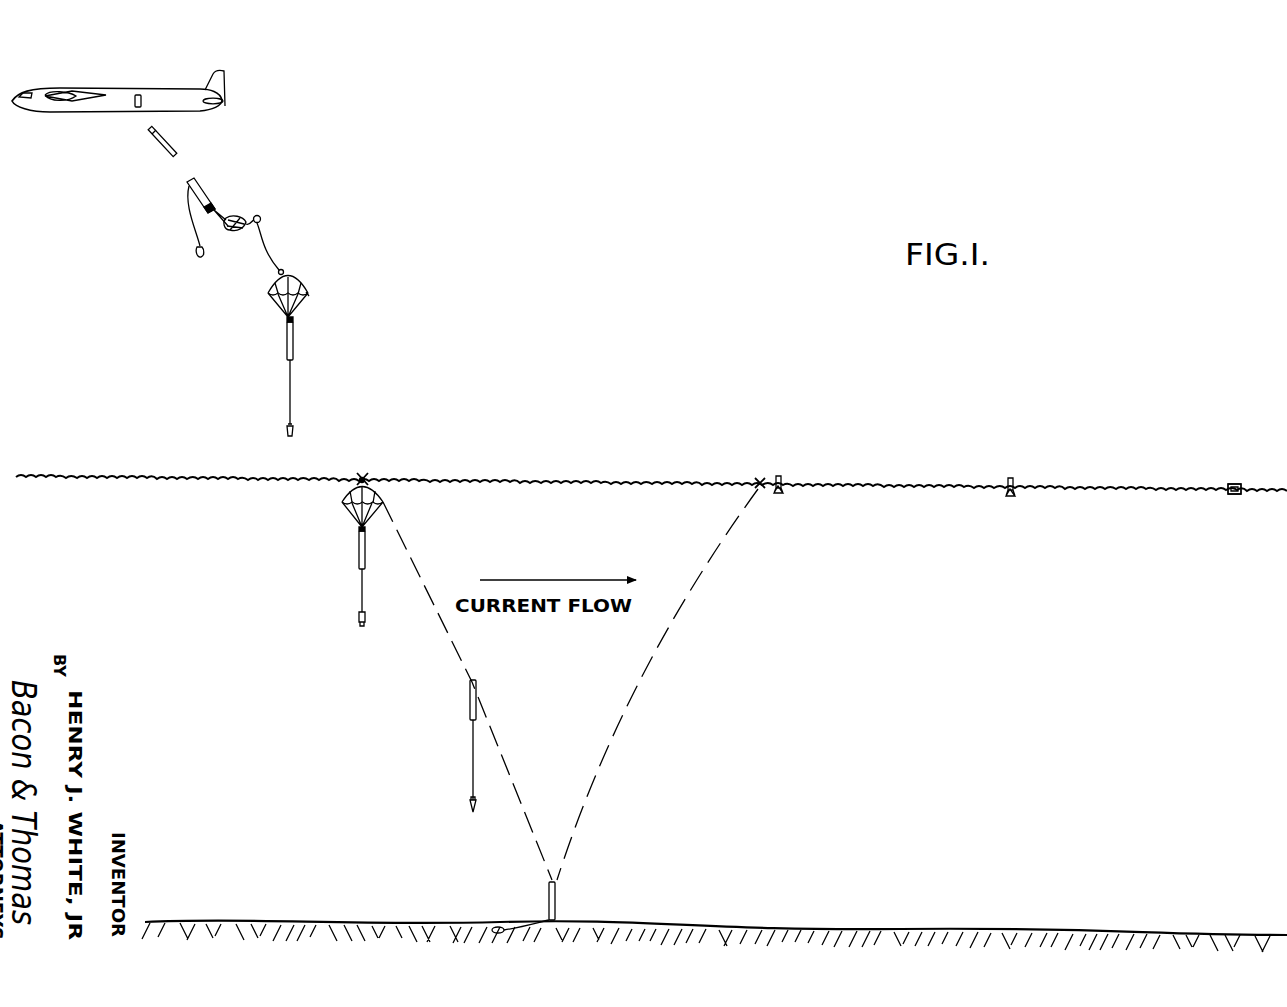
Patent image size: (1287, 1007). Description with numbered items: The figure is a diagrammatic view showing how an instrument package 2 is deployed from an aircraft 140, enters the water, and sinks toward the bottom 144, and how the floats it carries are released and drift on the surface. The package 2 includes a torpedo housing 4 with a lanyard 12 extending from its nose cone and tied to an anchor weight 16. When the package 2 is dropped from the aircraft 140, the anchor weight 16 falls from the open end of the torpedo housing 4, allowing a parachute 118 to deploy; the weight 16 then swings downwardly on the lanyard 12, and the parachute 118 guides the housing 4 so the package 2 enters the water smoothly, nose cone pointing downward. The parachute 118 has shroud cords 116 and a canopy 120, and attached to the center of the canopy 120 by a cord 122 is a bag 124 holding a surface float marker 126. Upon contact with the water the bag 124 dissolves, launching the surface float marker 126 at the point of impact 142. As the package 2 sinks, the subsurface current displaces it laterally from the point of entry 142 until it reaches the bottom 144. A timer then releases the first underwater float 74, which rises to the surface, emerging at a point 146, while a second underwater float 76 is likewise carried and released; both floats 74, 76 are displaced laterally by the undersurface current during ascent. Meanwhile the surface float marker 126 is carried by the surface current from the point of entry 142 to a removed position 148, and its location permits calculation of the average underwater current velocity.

The instrument package 2 is at (172, 140).
The torpedo housing 4 is at (195, 182).
The lanyard 12 is at (193, 221).
The anchor weight 16 is at (199, 256).
The first underwater float 74 is at (1016, 479).
The second underwater float 76 is at (785, 477).
The shroud cords 116 is at (306, 296).
The parachute 118 is at (229, 237).
The canopy 120 is at (233, 218).
The cord 122 is at (287, 270).
The bag 124 is at (256, 224).
The surface float marker 126 is at (1238, 496).
The aircraft 140 is at (80, 114).
The point of impact 142 is at (366, 477).
The bottom 144 is at (658, 926).
The emergence point 146 is at (761, 477).
The removed position 148 is at (1238, 482).